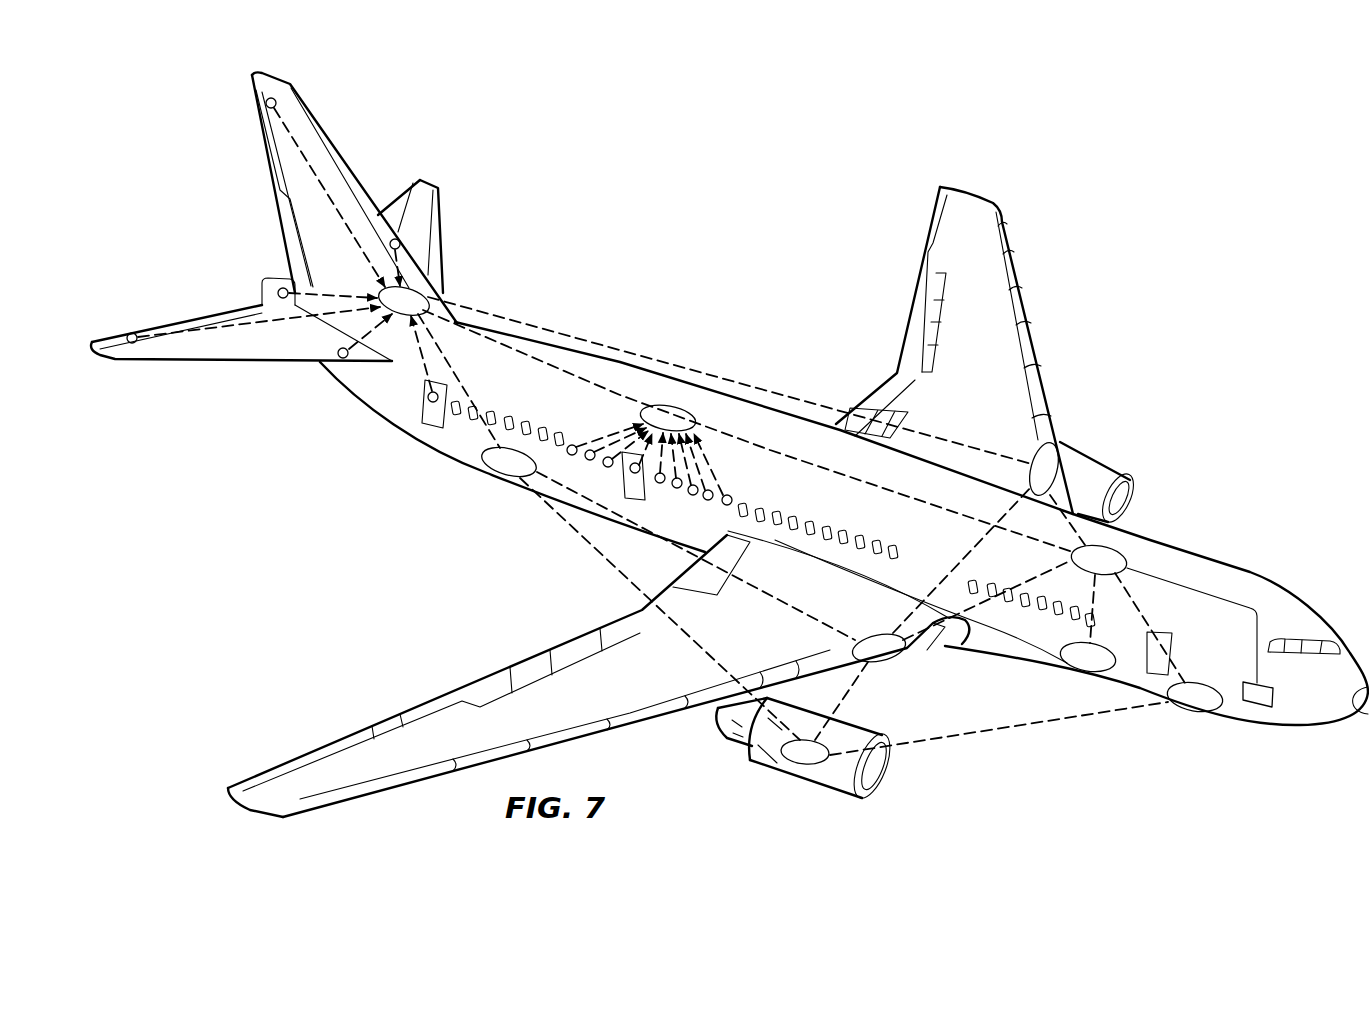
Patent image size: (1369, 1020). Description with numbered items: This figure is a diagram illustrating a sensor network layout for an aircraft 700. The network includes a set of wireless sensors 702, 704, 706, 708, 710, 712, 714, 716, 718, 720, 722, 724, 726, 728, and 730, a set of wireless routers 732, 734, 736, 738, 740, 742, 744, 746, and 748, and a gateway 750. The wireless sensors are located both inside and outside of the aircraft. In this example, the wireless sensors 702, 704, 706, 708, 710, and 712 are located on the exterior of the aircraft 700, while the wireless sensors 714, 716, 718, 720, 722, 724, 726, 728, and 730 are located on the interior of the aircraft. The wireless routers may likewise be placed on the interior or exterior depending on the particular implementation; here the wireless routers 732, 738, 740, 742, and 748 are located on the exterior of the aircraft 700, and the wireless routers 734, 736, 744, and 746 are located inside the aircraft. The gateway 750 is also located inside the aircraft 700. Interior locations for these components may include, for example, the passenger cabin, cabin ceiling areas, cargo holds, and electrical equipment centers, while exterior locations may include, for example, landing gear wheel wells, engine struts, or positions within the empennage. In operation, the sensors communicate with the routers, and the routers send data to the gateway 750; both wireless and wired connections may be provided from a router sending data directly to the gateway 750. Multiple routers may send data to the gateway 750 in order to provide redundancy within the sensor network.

The aircraft 700 is at (1233, 566).
The wireless sensor 702 is at (266, 103).
The wireless sensor 704 is at (392, 240).
The wireless sensor 706 is at (132, 343).
The wireless sensor 708 is at (280, 290).
The wireless sensor 710 is at (338, 357).
The wireless sensor 712 is at (428, 400).
The wireless sensor 714 is at (570, 444).
The wireless sensor 716 is at (572, 456).
The wireless sensor 718 is at (590, 461).
The wireless sensor 720 is at (608, 468).
The wireless sensor 722 is at (637, 474).
The wireless sensor 724 is at (664, 485).
The wireless sensor 726 is at (702, 490).
The wireless sensor 728 is at (747, 540).
The wireless sensor 730 is at (733, 503).
The wireless router 732 is at (428, 292).
The wireless router 734 is at (490, 466).
The wireless router 736 is at (693, 412).
The wireless router 738 is at (800, 762).
The wireless router 740 is at (873, 636).
The wireless router 742 is at (1032, 445).
The wireless router 744 is at (1122, 548).
The wireless router 746 is at (1068, 668).
The wireless router 748 is at (1196, 688).
The gateway 750 is at (1273, 695).